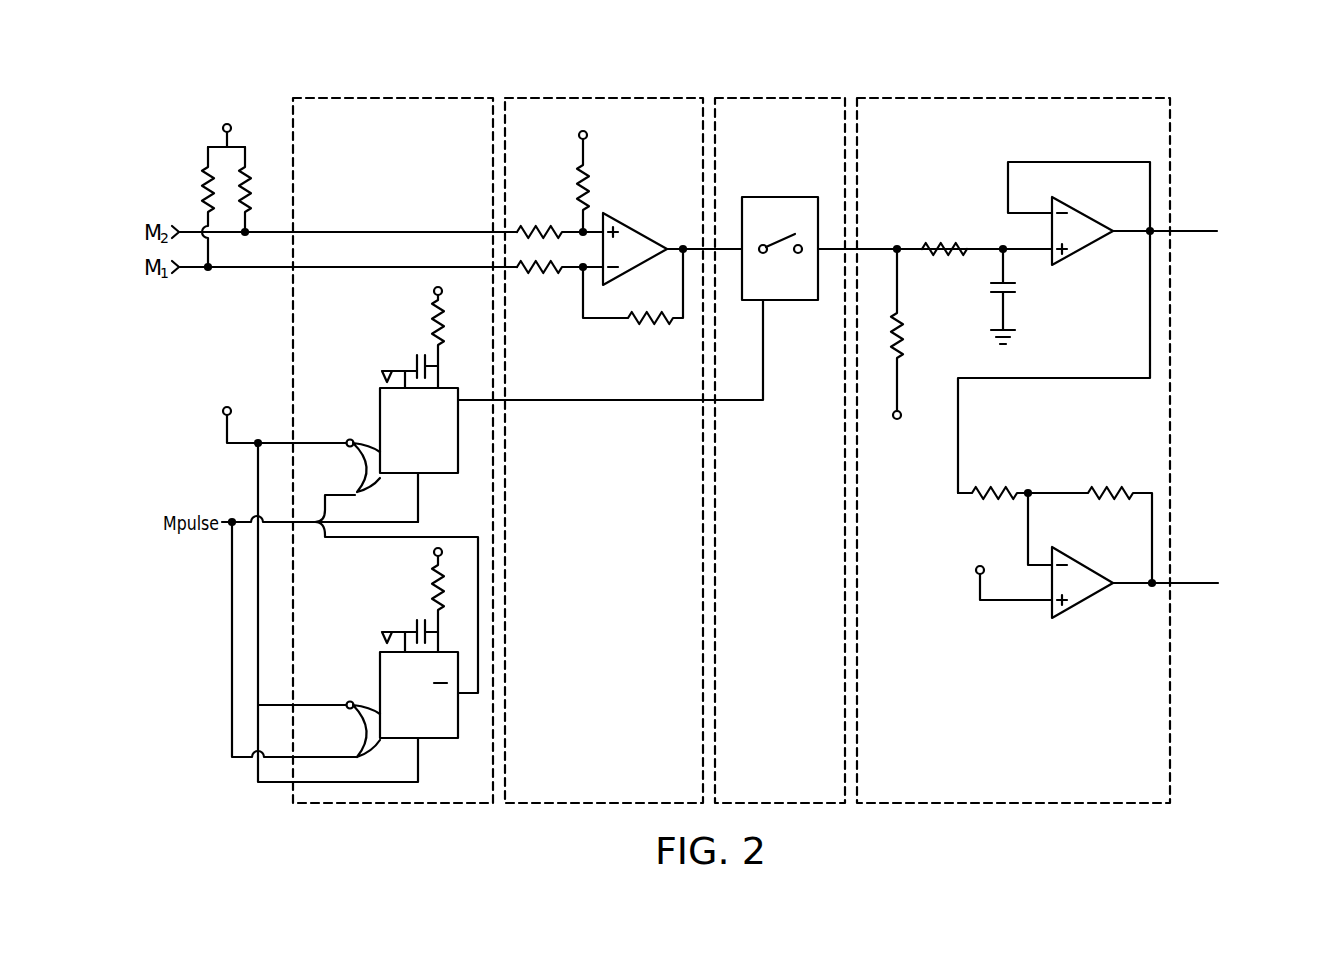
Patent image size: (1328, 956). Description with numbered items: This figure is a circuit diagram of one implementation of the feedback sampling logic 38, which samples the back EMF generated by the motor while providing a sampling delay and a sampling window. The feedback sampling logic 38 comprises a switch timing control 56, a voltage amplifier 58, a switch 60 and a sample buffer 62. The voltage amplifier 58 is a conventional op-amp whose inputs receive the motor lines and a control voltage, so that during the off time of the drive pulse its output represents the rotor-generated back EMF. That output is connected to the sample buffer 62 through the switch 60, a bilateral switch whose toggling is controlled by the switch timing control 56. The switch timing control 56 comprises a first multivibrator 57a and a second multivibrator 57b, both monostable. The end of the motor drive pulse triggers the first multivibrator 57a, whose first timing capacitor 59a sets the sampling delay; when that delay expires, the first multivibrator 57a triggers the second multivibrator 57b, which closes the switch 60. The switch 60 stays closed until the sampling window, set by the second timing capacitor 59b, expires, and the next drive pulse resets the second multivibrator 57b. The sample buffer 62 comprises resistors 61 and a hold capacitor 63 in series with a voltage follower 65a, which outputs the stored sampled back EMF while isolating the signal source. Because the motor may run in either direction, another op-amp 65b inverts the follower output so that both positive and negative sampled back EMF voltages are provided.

The feedback sampling logic 38 is at (1183, 97).
The switch timing control 56 is at (474, 134).
The voltage amplifier 58 is at (688, 134).
The switch 60 is at (800, 134).
The sample buffer 62 is at (1031, 134).
The first multivibrator 57a is at (378, 677).
The second multivibrator 57b is at (378, 413).
The first timing capacitor 59a is at (416, 618).
The second timing capacitor 59b is at (416, 352).
The resistors 61 is at (950, 237).
The hold capacitor 63 is at (990, 290).
The voltage follower 65a is at (1083, 218).
The inverting op-amp 65b is at (1083, 568).